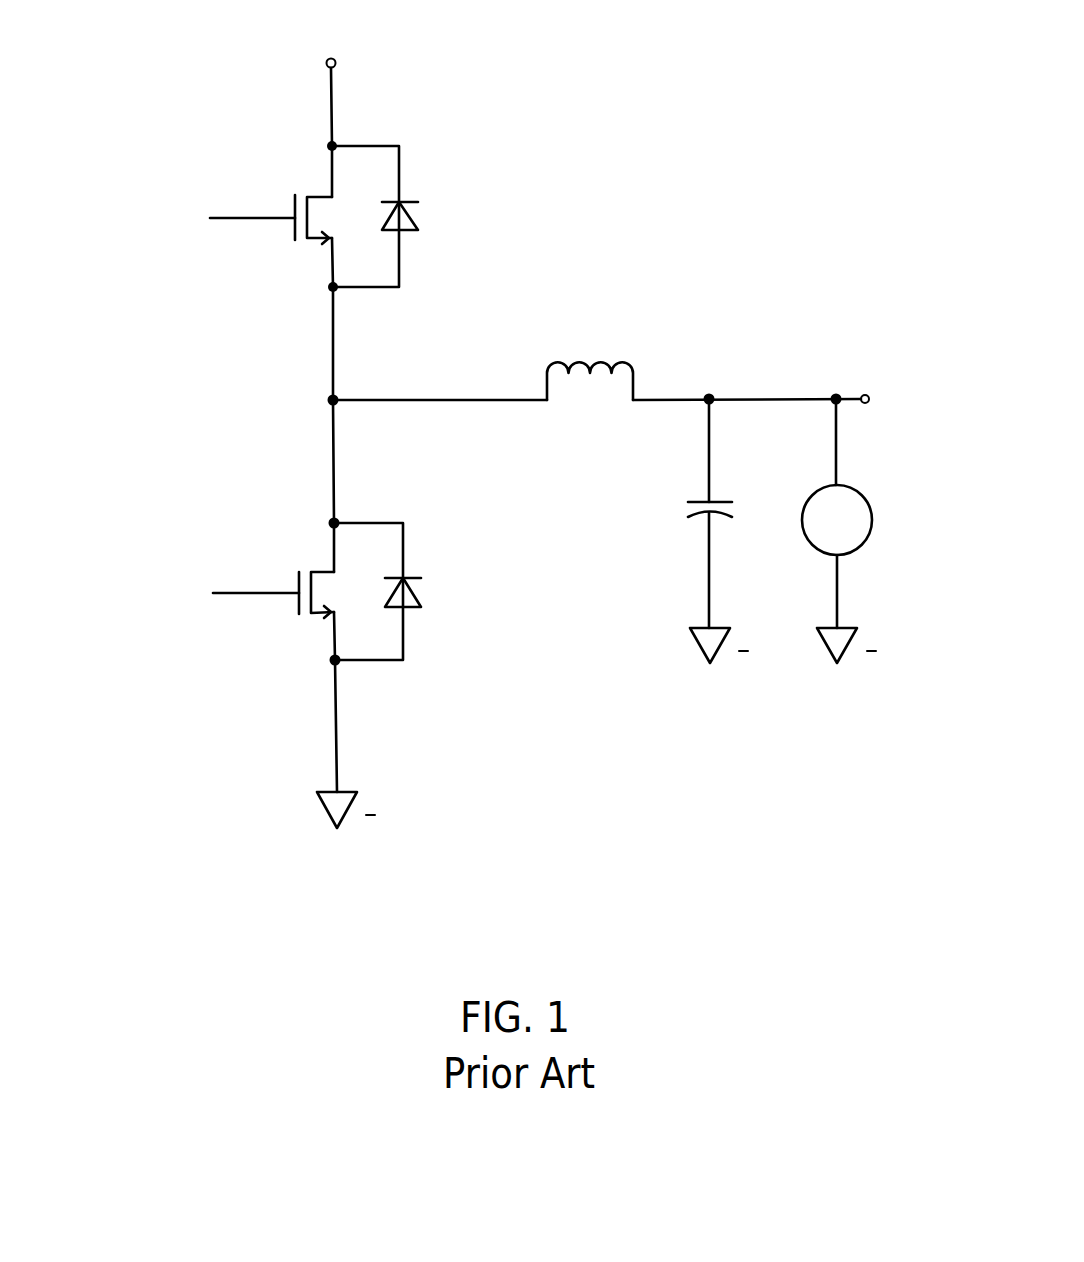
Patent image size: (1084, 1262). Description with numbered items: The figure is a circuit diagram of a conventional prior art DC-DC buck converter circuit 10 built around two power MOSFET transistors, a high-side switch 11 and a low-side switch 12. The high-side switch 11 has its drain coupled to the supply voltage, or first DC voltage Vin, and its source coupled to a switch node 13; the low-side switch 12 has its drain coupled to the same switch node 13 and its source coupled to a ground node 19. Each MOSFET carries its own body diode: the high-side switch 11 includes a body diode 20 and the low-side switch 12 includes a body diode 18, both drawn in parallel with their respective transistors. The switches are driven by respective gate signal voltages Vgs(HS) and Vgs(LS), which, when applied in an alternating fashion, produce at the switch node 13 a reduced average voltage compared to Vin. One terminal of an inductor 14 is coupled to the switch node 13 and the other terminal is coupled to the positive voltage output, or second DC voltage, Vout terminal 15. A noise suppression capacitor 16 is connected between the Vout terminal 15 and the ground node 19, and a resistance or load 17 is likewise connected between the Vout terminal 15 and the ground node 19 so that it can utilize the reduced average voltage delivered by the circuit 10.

The DC-DC buck converter circuit 10 is at (528, 427).
The high-side switch 11 is at (295, 204).
The low-side switch 12 is at (297, 604).
The switch node 13 is at (338, 399).
The inductor 14 is at (599, 363).
The Vout terminal 15 is at (862, 393).
The noise suppression capacitor 16 is at (700, 498).
The load 17 is at (872, 520).
The body diode 18 is at (413, 608).
The ground node 19 is at (348, 788).
The body diode 20 is at (413, 214).